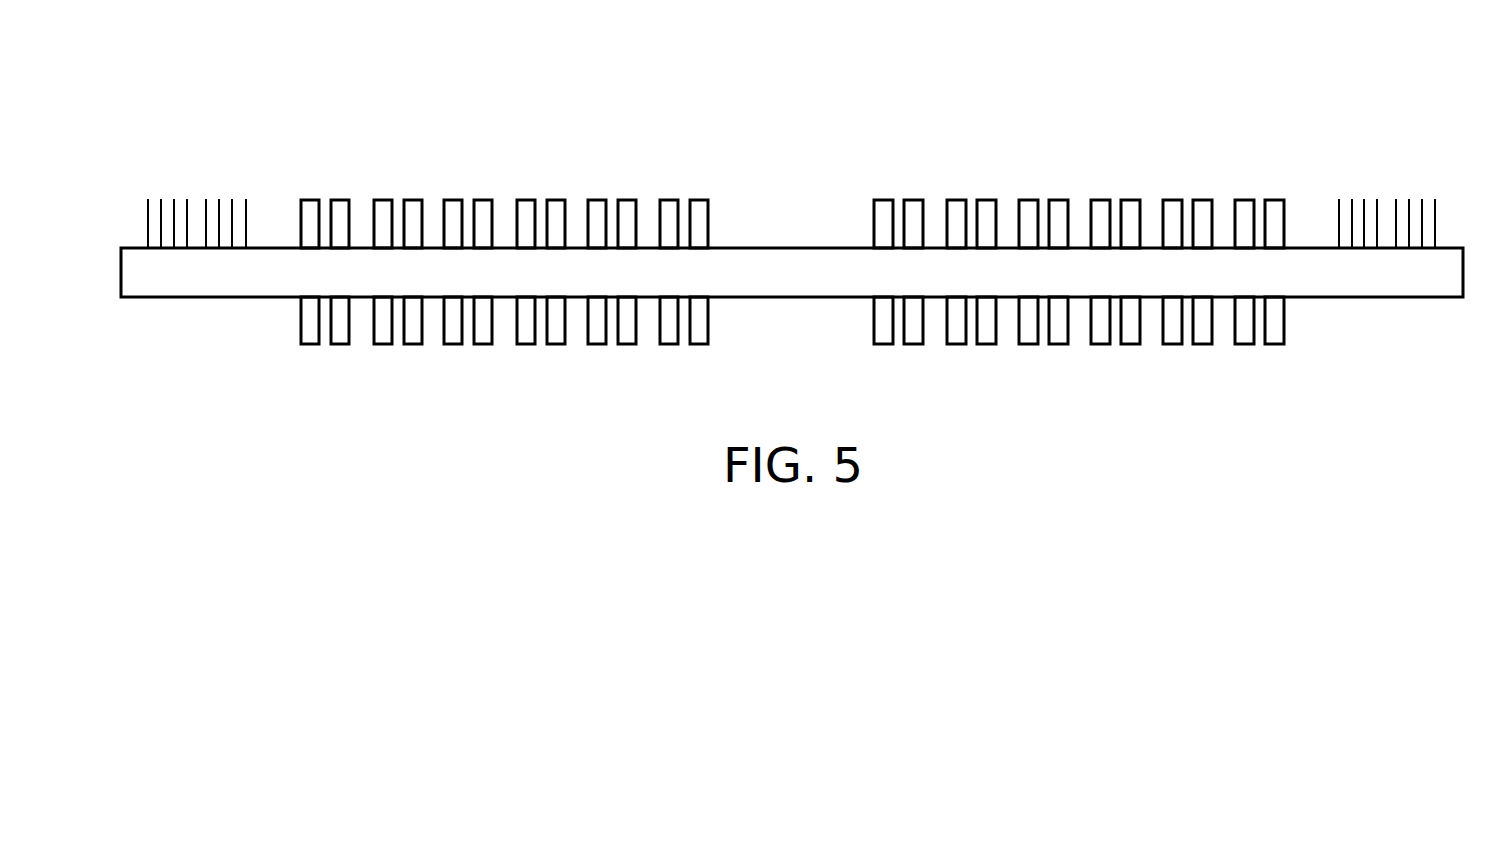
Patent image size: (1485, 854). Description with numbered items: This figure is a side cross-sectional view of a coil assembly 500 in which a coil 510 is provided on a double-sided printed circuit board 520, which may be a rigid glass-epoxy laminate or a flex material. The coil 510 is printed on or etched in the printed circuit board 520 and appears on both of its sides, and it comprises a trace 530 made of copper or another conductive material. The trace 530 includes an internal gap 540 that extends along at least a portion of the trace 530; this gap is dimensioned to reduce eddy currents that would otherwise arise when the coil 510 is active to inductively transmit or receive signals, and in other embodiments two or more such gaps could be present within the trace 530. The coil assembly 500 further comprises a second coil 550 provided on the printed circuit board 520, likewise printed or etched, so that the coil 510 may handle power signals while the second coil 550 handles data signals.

The coil assembly 500 is at (792, 270).
The coil 510 is at (792, 269).
The printed circuit board 520 is at (1368, 277).
The trace 530 is at (412, 198).
The internal gap 540 is at (540, 334).
The second coil 550 is at (192, 180).